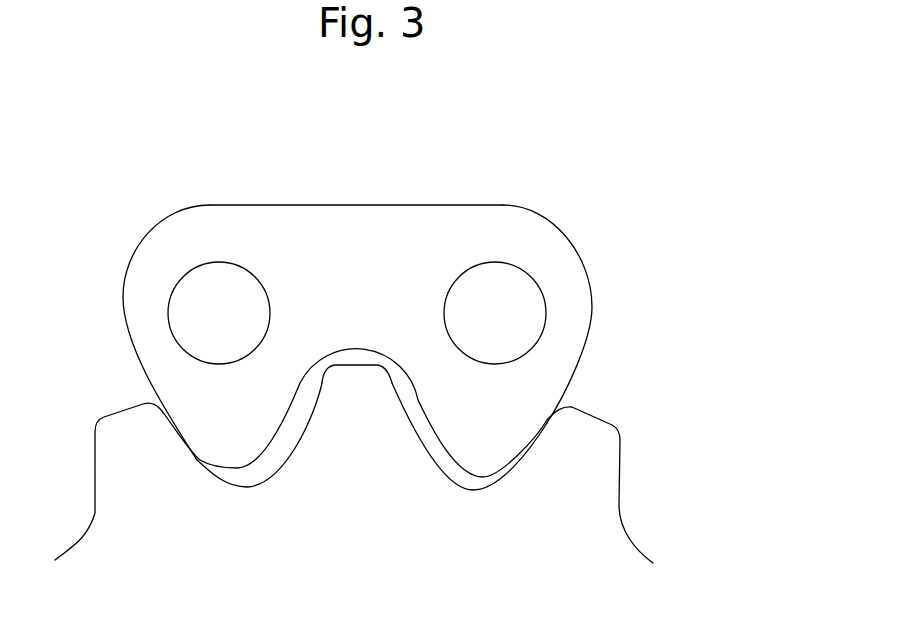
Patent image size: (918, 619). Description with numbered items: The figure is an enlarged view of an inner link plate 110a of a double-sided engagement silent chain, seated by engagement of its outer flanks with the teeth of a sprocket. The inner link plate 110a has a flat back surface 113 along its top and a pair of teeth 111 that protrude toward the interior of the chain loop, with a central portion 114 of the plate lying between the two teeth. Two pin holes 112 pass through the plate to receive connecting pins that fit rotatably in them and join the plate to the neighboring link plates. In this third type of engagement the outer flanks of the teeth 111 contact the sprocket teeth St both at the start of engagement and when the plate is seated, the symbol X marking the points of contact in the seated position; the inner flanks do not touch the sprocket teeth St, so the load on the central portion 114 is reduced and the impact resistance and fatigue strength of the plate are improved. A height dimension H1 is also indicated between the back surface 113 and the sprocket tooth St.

The inner link plate 110a is at (460, 227).
The flat back surface 113 is at (348, 203).
The teeth 111 is at (230, 448).
The central arched recess of link plate 114 is at (360, 348).
The pin hole 112 is at (541, 297).
The sprocket tooth St is at (608, 462).
The point of contact X is at (197, 462).
The height from upper edge to tooth tip H1 is at (357, 205).